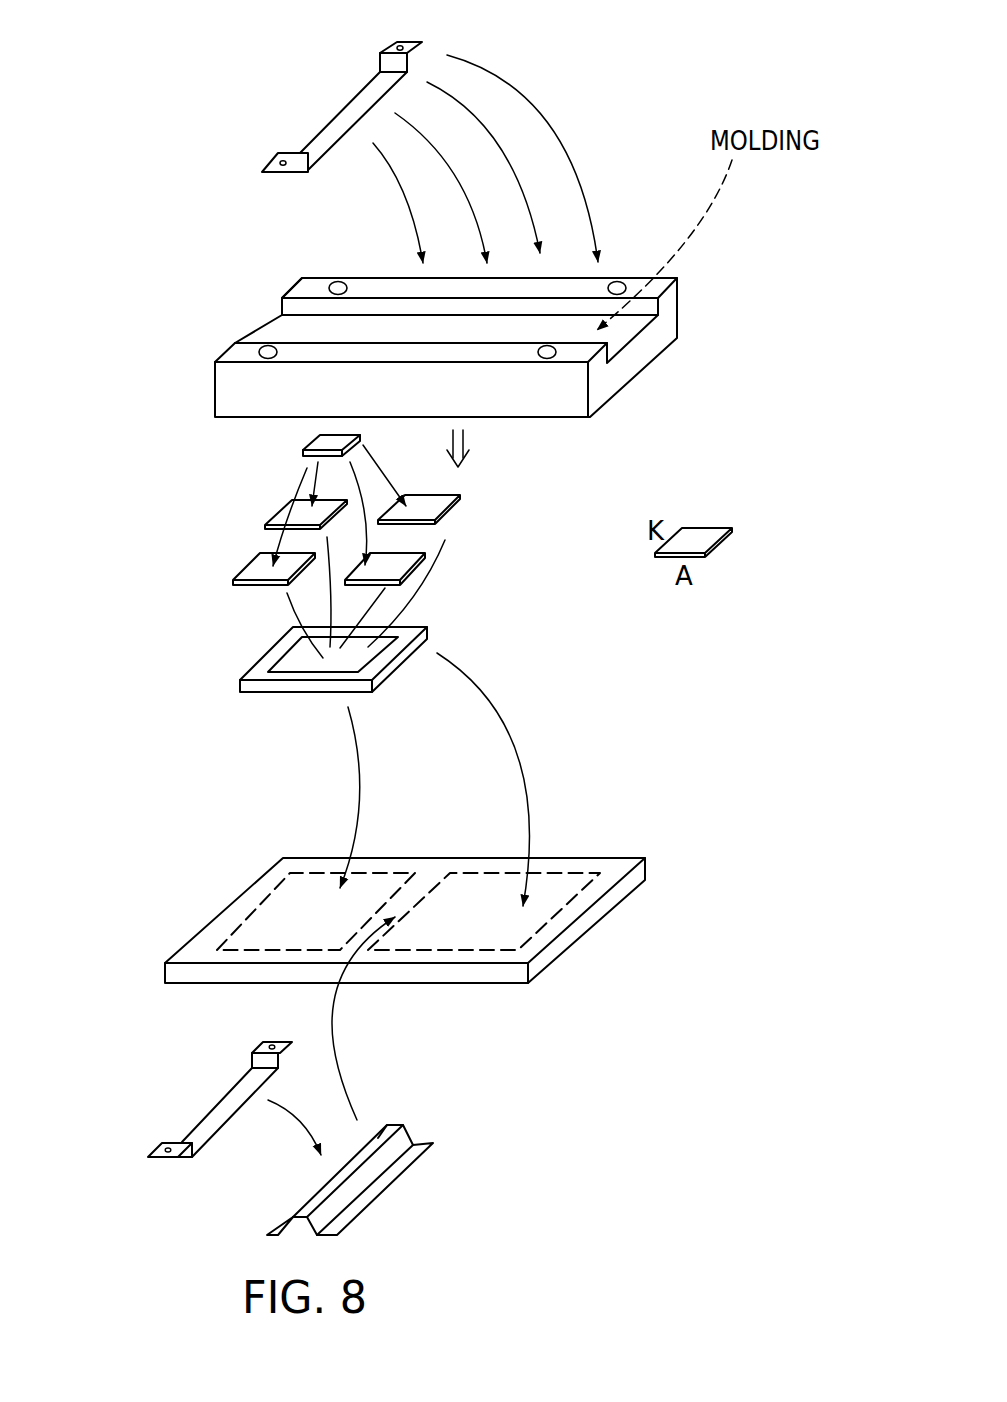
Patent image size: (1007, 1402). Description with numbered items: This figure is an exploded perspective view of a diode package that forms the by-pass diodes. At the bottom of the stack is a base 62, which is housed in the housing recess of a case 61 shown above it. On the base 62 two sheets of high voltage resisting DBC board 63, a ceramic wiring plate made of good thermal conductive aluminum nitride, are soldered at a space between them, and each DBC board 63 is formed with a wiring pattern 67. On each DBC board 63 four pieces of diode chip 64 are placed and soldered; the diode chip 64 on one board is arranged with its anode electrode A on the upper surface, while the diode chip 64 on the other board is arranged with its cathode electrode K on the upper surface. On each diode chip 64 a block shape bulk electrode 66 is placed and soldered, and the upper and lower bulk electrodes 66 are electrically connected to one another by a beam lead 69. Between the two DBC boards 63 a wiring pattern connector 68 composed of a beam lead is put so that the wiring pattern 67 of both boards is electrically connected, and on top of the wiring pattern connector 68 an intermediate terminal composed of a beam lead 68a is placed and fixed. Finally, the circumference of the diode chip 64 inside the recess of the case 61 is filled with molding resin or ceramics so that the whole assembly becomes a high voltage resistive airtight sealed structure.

The case 61 is at (680, 320).
The base 62 is at (647, 883).
The DBC board 63 is at (238, 683).
The diode chip 64 is at (445, 513).
The bulk electrode 66 is at (303, 442).
The wiring pattern 67 is at (397, 638).
The wiring pattern connector 68 is at (405, 1177).
The intermediate terminal 68a is at (158, 1160).
The beam lead 69 is at (382, 53).